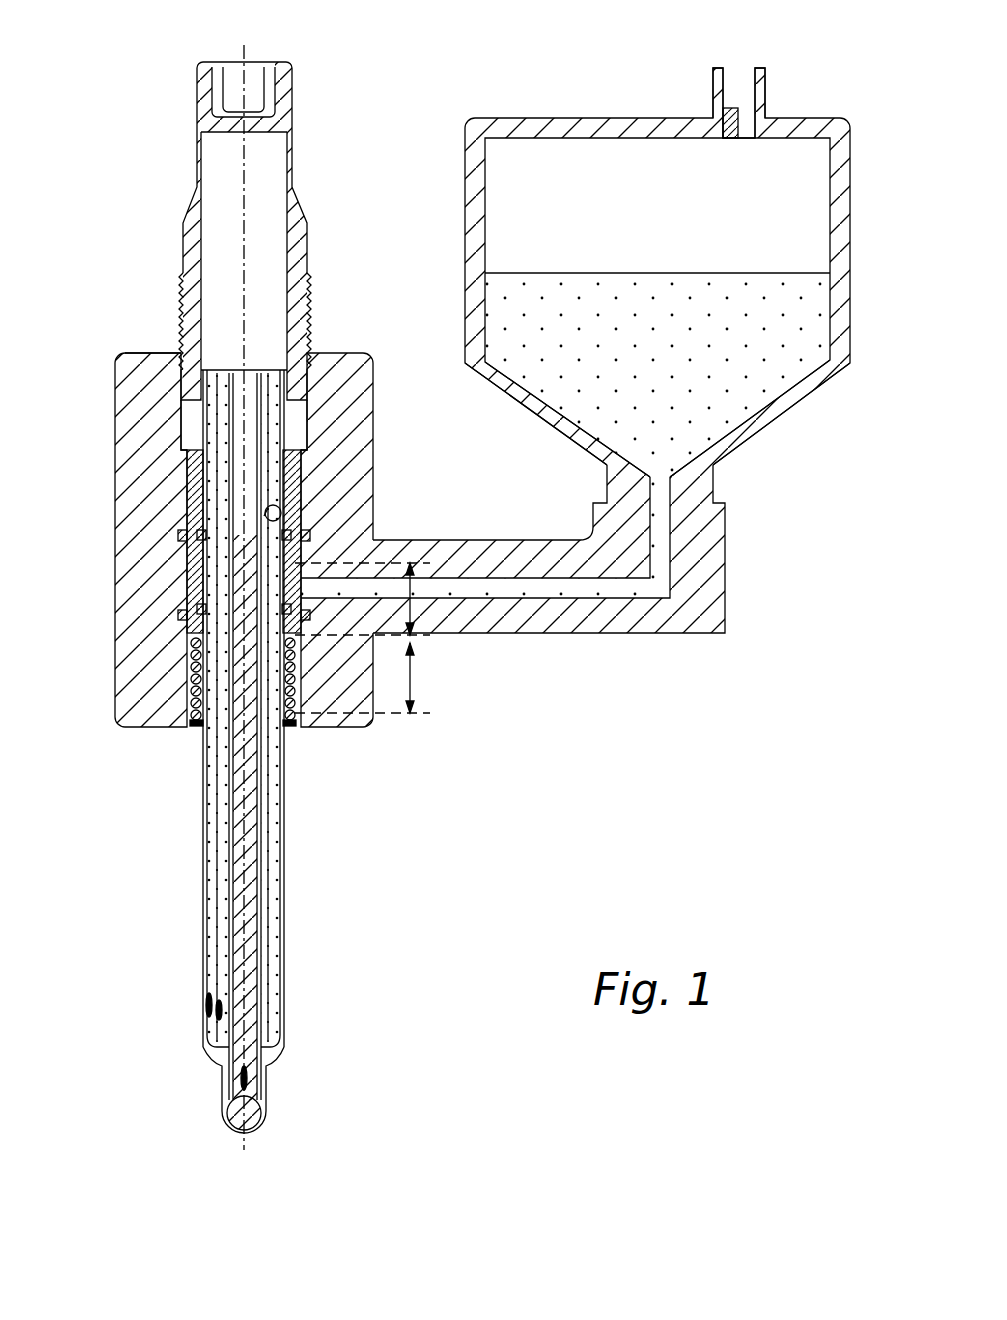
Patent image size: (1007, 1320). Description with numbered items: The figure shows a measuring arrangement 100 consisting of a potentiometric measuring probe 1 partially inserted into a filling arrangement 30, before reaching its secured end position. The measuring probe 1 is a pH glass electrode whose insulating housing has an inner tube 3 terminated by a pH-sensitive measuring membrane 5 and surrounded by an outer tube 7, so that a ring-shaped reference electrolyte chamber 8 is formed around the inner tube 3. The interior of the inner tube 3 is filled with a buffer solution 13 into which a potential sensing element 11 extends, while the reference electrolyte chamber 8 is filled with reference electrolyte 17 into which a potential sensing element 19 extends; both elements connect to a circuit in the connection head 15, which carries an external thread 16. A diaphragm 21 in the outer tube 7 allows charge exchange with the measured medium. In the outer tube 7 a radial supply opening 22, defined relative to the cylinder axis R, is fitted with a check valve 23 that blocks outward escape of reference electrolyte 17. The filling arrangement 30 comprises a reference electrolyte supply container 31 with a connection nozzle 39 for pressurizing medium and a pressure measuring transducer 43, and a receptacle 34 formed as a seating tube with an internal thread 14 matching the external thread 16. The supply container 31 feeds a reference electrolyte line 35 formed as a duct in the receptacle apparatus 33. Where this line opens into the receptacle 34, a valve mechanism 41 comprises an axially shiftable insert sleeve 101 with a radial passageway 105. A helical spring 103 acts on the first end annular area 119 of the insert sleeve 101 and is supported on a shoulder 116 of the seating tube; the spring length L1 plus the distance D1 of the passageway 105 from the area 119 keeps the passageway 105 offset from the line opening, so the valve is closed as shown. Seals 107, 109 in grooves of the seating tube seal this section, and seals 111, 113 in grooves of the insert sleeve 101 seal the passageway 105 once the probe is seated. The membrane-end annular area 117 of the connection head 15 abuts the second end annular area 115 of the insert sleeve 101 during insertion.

The measuring arrangement 100 is at (146, 75).
The measuring probe 1 is at (324, 90).
The connection head 15 is at (290, 173).
The external thread 16 is at (307, 280).
The reference electrolyte chamber 8 is at (300, 413).
The receptacle 34 is at (347, 353).
The internal thread 14 is at (143, 352).
The valve mechanism 41 is at (328, 451).
The filling arrangement 30 is at (772, 615).
The reference electrolyte supply container 31 is at (777, 407).
The connection nozzle 39 is at (757, 93).
The pressure measuring transducer 43 is at (727, 117).
The receptacle apparatus 33 is at (628, 622).
The reference electrolyte line 35 is at (540, 588).
The insert sleeve 101 is at (197, 510).
The seal 107 is at (177, 540).
The passageway 105 is at (310, 532).
The seal 113 is at (200, 603).
The seal 109 is at (178, 617).
The membrane-end annular area 117 is at (187, 403).
The second end annular area 115 is at (187, 443).
The first end annular area 119 is at (190, 653).
The helical spring 103 is at (188, 685).
The shoulder 116 is at (197, 722).
The check valve 23 is at (282, 506).
The supply opening 22 is at (290, 503).
The seal 111 is at (378, 490).
The outer tube 7 is at (208, 935).
The inner tube 3 is at (262, 858).
The solution 13 is at (247, 798).
The reference electrolyte 17 is at (270, 945).
The measuring membrane 5 is at (263, 1117).
The cylinder axis R is at (245, 1138).
The diaphragm 21 is at (206, 1010).
The potential sensing element 19 is at (222, 1010).
The potential sensing element 11 is at (248, 1085).
The distance D1 is at (415, 617).
The length L1 is at (415, 680).